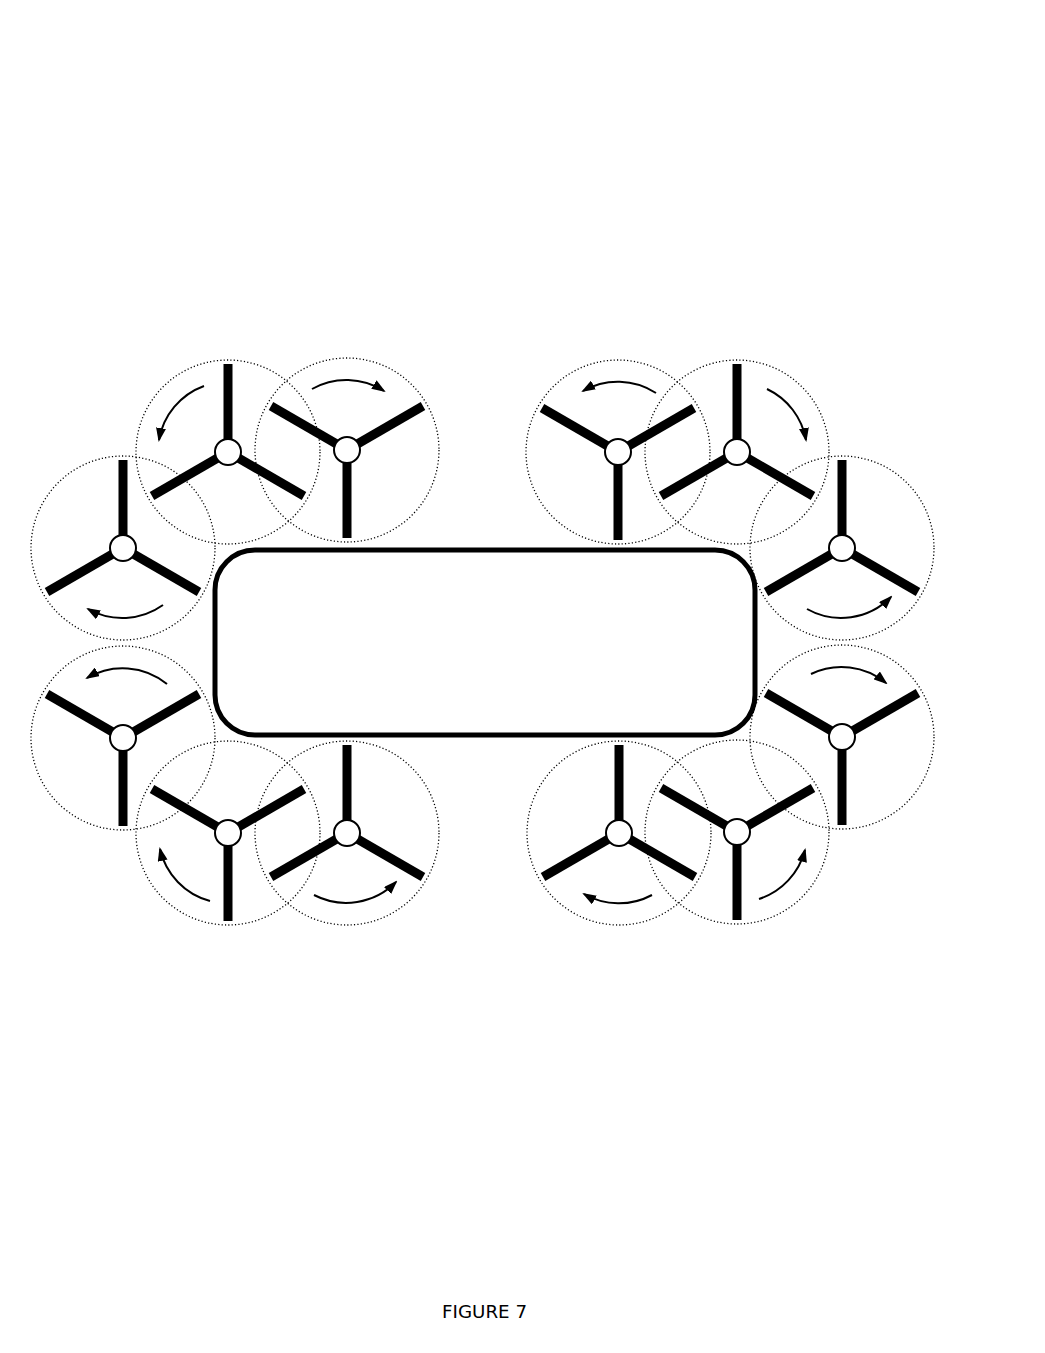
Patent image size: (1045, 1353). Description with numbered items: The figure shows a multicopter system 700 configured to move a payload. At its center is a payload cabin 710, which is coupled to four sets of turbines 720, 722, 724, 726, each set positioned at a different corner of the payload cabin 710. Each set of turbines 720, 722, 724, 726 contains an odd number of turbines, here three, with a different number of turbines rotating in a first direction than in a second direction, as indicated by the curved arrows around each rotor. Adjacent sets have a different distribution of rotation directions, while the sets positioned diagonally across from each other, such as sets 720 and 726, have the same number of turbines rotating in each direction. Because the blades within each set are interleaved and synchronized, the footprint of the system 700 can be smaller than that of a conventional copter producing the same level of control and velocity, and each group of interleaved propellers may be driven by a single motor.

The multicopter system 700 is at (162, 152).
The payload cabin 710 is at (411, 597).
The set of turbines 720 is at (130, 385).
The set of turbines 722 is at (855, 422).
The set of turbines 724 is at (108, 883).
The set of turbines 726 is at (843, 902).